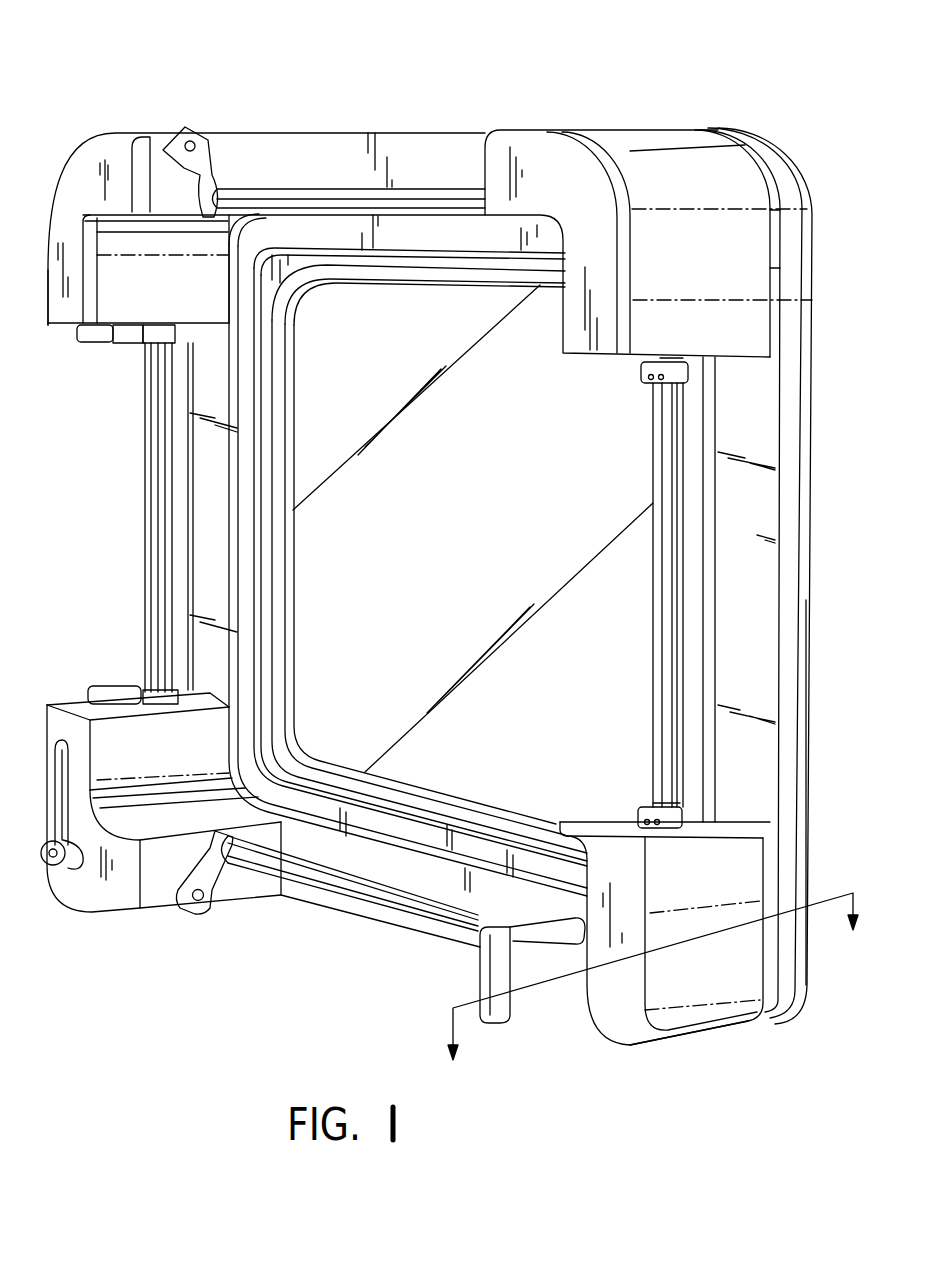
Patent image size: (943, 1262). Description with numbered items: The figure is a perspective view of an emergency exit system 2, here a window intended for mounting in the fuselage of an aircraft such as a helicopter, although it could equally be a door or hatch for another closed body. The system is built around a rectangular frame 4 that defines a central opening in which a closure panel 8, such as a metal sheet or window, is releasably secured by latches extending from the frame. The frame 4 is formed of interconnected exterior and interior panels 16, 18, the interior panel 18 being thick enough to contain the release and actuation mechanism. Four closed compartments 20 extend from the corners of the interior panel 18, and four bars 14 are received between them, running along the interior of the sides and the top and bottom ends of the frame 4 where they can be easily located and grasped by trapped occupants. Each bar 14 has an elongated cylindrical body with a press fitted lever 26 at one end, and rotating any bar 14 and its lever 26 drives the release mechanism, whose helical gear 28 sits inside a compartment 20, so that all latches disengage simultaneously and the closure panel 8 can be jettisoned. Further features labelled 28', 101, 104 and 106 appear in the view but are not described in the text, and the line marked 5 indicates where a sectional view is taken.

The emergency exit system 2 is at (424, 68).
The rectangular frame 4 is at (757, 138).
The closure panel 8 is at (474, 528).
The bars 14 is at (318, 189).
The exterior panel 16 is at (805, 952).
The interior panel 18 is at (781, 1008).
The closed compartments 20 is at (176, 306).
The lever 26 is at (443, 197).
The helical gear 28 is at (459, 385).
The bracket 28' is at (457, 650).
The rim 101 is at (276, 772).
The latch lever 104 is at (62, 803).
The gasket 106 is at (288, 374).
The section line 5- 5 is at (654, 995).